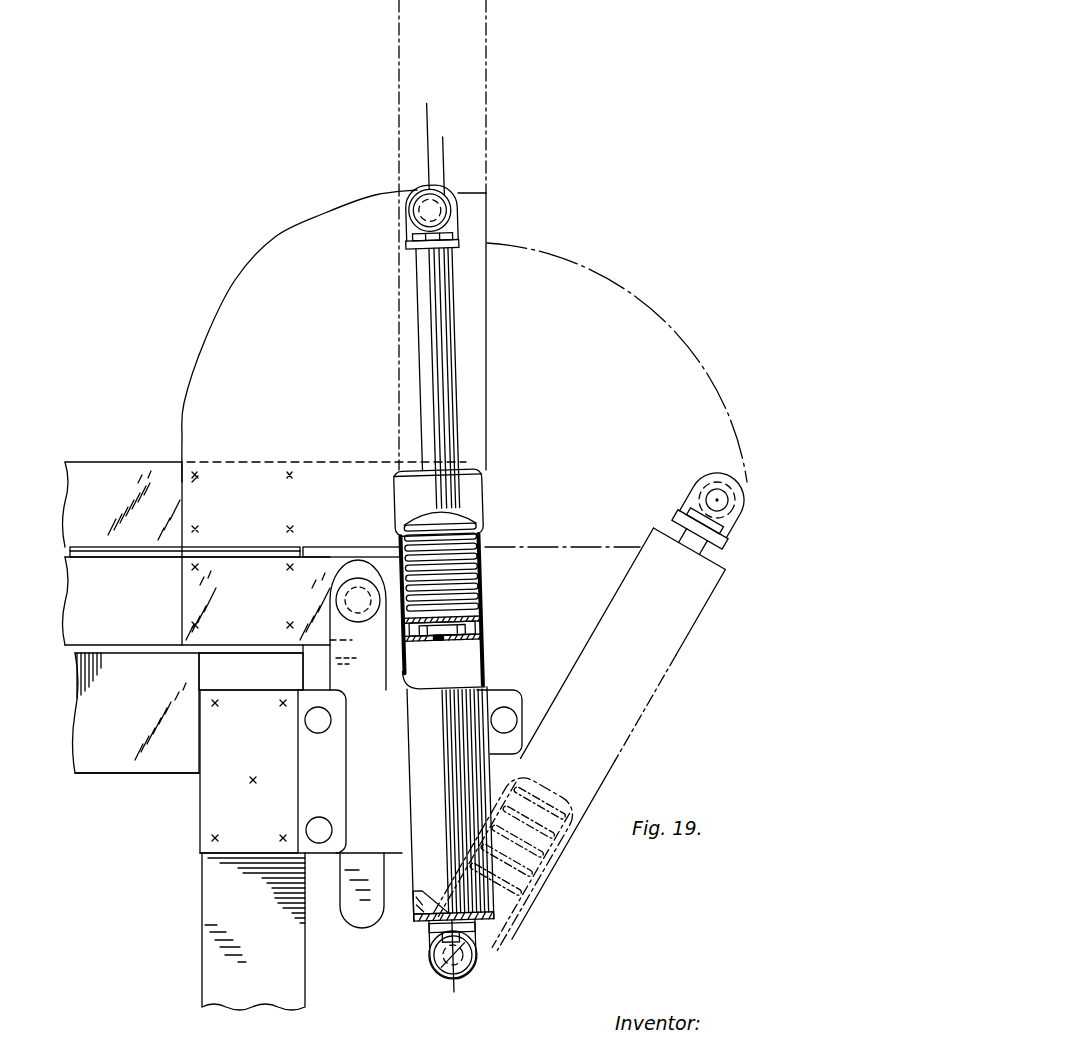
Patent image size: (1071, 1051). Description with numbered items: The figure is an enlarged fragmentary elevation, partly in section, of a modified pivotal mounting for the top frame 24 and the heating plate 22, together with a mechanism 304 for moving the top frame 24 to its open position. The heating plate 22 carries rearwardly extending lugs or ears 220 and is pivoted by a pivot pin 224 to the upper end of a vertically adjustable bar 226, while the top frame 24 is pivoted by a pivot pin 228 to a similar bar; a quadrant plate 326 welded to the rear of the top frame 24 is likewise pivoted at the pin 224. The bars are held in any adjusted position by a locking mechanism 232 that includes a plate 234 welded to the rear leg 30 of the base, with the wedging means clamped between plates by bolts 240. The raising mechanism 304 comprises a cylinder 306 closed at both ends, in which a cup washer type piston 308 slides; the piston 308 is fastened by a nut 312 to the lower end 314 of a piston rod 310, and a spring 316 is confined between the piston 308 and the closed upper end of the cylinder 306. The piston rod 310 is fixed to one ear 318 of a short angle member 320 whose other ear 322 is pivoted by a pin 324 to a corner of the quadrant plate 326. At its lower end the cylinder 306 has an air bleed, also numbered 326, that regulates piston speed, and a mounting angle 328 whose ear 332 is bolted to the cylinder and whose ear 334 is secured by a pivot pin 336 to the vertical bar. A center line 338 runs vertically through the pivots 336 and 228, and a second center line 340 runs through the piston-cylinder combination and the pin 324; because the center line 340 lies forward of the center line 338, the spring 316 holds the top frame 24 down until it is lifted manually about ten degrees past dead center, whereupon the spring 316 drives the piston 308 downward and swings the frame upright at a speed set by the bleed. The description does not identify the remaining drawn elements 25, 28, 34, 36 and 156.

The heating plate 22 is at (56, 604).
The top frame 24 is at (485, 107).
The strip 25 is at (116, 547).
The base member 28 is at (129, 760).
The rear leg 30 is at (262, 995).
The block 34 is at (90, 720).
The flange 36 is at (112, 658).
The panel 156 is at (73, 483).
The lugs or ears 220 is at (286, 700).
The pivot pin 224 is at (360, 595).
The vertically adjustable bar 226 is at (350, 664).
The pivot pin 228 is at (455, 497).
The locking mechanism 232 is at (298, 749).
The plate 234 is at (222, 812).
The bolts 240 is at (320, 722).
The mechanism for raising the top frame 304 is at (491, 638).
The cylinder 306 is at (477, 673).
The piston 308 is at (477, 614).
The piston rod 310 is at (458, 417).
The nut 312 is at (456, 638).
The lower end of piston rod 314 is at (440, 641).
The spring 316 is at (487, 572).
The ear 318 is at (405, 249).
The short angle member 320 is at (463, 233).
The ear 322 is at (457, 215).
The pin 324 is at (417, 195).
The quadrant plate 326 is at (240, 322).
The mounting angle 328 is at (465, 983).
The ear 332 is at (480, 940).
The ear 334 is at (478, 968).
The pivot pin 336 is at (433, 974).
The center line 338 is at (446, 343).
The center line 340 is at (436, 359).